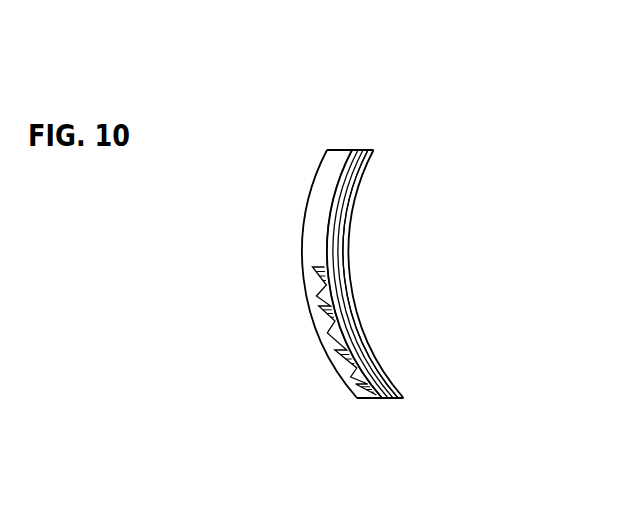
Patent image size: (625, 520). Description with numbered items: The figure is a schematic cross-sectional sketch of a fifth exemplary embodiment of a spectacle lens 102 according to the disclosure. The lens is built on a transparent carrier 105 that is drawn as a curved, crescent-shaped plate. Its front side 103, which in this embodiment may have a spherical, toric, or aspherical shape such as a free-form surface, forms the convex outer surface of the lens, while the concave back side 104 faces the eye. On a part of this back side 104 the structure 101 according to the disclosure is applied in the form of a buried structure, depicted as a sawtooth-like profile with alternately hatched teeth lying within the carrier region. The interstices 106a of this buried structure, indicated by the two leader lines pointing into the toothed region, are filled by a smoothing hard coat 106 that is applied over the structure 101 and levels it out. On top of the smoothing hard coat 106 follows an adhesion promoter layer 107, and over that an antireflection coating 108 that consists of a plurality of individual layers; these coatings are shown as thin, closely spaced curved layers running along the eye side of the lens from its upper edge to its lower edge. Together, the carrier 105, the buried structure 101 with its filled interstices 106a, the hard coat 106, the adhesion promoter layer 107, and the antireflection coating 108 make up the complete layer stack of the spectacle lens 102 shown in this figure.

The structure 101 is at (379, 340).
The spectacle lens 102 is at (372, 118).
The front side 103 is at (292, 290).
The back side 104 is at (437, 311).
The transparent carrier 105 is at (358, 382).
The smoothing hard coat 106 is at (388, 398).
The interstices 106a is at (338, 313).
The adhesion promoter layer 107 is at (367, 151).
The antireflection coating 108 is at (362, 180).